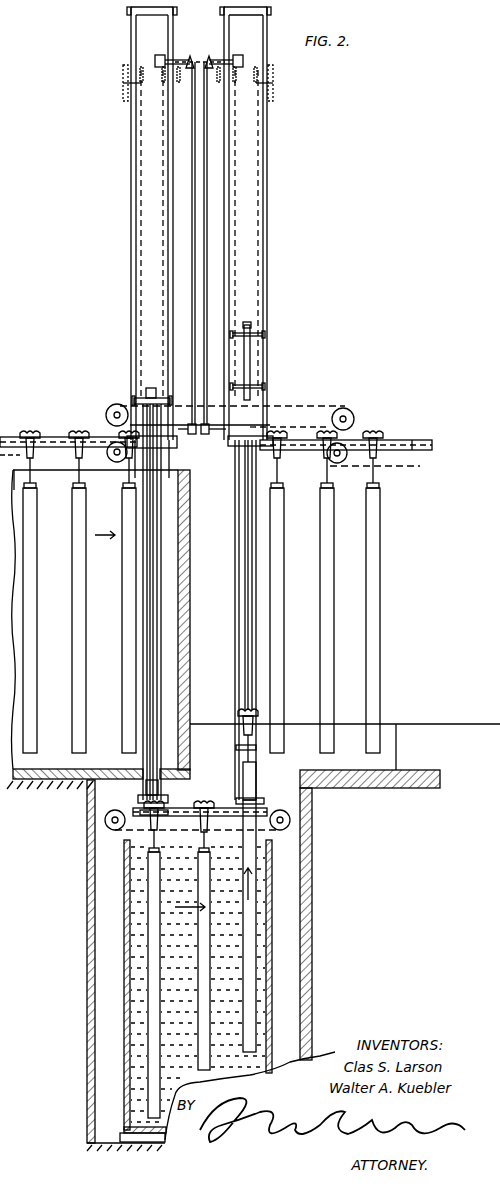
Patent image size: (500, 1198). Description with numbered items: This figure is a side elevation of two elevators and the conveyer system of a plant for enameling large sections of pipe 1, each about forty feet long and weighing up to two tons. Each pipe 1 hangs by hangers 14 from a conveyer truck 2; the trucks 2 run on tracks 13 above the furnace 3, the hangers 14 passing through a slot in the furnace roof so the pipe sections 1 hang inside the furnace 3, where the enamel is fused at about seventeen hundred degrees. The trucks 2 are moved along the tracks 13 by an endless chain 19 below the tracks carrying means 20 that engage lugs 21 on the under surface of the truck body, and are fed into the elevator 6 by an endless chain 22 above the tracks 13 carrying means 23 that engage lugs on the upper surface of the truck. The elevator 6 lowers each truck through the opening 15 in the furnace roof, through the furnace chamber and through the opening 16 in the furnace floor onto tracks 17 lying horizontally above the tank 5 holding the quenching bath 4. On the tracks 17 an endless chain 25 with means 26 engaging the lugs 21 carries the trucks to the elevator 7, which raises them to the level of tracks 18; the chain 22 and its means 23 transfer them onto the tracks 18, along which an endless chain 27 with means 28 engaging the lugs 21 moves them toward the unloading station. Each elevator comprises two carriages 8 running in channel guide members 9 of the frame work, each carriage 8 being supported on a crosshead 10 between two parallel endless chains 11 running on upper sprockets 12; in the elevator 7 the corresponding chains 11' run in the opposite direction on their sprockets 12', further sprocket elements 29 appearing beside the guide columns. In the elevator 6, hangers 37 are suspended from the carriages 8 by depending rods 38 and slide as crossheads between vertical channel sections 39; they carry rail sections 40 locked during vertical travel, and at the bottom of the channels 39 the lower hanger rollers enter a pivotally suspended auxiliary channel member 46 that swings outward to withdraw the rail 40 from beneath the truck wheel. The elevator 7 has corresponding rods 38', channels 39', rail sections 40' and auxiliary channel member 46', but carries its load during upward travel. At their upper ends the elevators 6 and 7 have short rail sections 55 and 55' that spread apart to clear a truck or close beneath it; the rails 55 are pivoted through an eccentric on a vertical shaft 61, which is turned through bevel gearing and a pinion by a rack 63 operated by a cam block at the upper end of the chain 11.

The pipe 1 is at (72, 605).
The conveyer truck 2 is at (24, 430).
The furnace 3 is at (189, 593).
The quenching bath 4 is at (129, 899).
The tank 5 is at (125, 942).
The elevator 6 is at (130, 300).
The elevator 7 is at (267, 306).
The carriage 8 is at (251, 356).
The channel guide members 9 is at (167, 274).
The crosshead 10 is at (16, 450).
The endless chains 11 is at (153, 235).
The chains 11' is at (249, 235).
The upper sprockets 12 is at (160, 89).
The chain 12' is at (238, 89).
The tracks 13 is at (98, 432).
The hangers 14 is at (78, 478).
The opening 15 is at (178, 484).
The opening 16 is at (140, 769).
The tracks 17 is at (222, 807).
The tracks 18 is at (393, 439).
The endless chain 19 is at (48, 436).
The means 20 is at (105, 466).
The lugs 21 is at (211, 816).
The endless chain 22 is at (282, 405).
The means 23 is at (118, 405).
The endless chain 25 is at (116, 809).
The means 26 is at (114, 831).
The endless chain 27 is at (418, 439).
The means 28 is at (362, 467).
The sprocket 29 is at (123, 96).
The hangers 37 is at (162, 780).
The depending rods 38 is at (134, 602).
The lifting rod 38' is at (244, 618).
The vertical channel sections 39 is at (130, 602).
The lifting rod 39' is at (234, 620).
The rail sections 40 is at (164, 821).
The clamp 40' is at (230, 751).
The auxiliary channel member 46 is at (143, 793).
The auxiliary channel member 46' is at (265, 783).
The short rail sections 55 is at (187, 442).
The short rail sections 55' is at (214, 442).
The vertical shaft 61 is at (204, 314).
The rack 63 is at (162, 57).